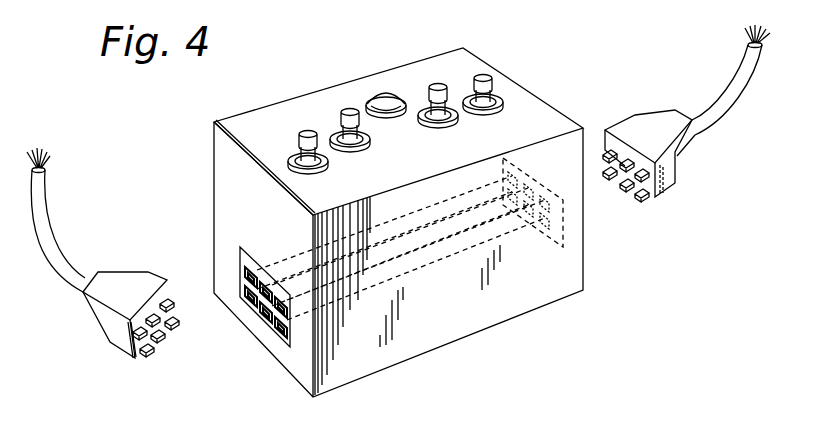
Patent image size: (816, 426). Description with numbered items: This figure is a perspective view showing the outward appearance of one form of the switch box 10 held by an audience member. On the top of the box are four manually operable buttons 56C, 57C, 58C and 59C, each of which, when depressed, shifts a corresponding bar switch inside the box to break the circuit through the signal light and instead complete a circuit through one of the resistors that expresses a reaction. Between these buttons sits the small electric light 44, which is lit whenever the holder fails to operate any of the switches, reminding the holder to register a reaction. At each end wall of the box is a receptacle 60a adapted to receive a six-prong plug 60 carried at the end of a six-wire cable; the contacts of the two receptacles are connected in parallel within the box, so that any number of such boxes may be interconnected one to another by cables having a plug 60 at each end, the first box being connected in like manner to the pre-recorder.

The switch box 10 is at (212, 193).
The electric light 44 is at (388, 100).
The button 56C is at (304, 134).
The button 57C is at (356, 110).
The button 58C is at (440, 87).
The button 59C is at (492, 86).
The six-prong plug 60 is at (98, 315).
The receptacle 60a is at (268, 322).